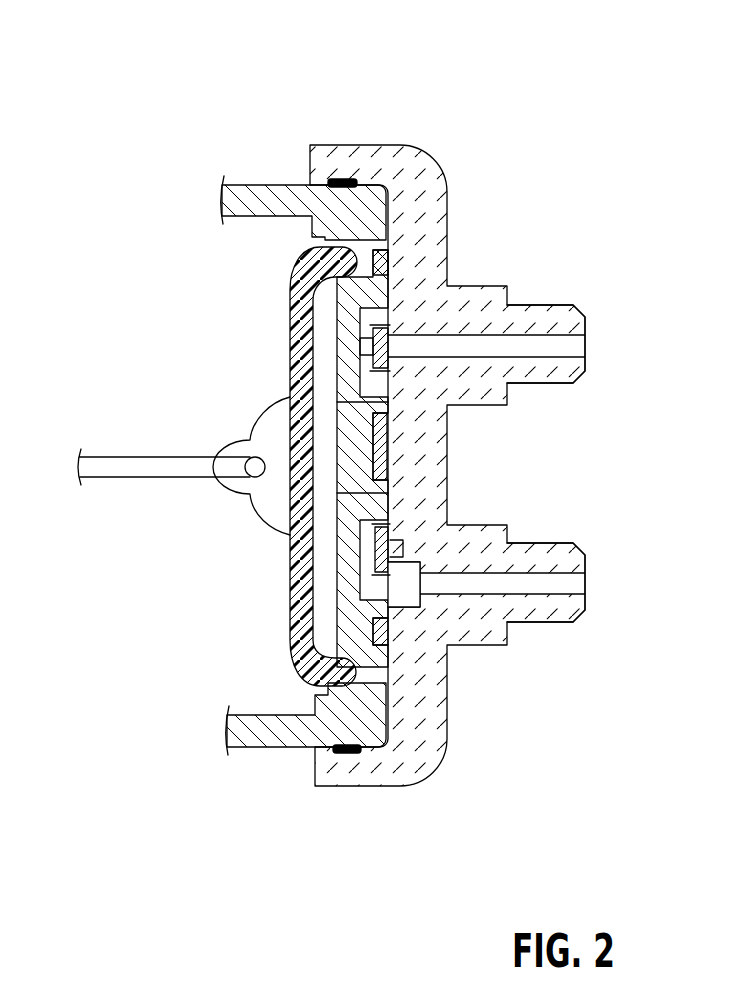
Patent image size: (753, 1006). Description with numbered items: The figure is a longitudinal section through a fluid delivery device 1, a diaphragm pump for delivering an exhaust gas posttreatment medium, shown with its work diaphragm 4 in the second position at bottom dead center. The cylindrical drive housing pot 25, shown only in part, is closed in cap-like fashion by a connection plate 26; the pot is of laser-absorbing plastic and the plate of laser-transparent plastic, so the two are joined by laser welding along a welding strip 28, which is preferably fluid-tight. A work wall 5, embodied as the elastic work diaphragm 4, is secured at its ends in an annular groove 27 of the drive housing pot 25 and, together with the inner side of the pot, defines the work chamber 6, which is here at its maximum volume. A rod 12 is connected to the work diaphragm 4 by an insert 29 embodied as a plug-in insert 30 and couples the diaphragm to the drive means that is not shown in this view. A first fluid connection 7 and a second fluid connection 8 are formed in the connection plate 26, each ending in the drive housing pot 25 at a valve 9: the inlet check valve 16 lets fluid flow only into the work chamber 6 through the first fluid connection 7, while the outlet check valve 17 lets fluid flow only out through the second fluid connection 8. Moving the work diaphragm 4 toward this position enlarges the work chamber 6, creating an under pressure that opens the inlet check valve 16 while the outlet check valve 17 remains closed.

The fluid delivery device 1 is at (470, 132).
The work diaphragm 4 is at (405, 448).
The work wall 5 is at (305, 490).
The work chamber 6 is at (325, 582).
The first fluid connection 7 is at (542, 346).
The second fluid connection 8 is at (545, 585).
The valve 9 is at (436, 466).
The rod 12 is at (128, 468).
The inlet check valve 16 is at (388, 347).
The outlet check valve 17 is at (387, 533).
The drive housing pot 25 is at (255, 202).
The connection plate 26 is at (400, 173).
The annular groove 27 is at (388, 262).
The welding strip 28 is at (340, 178).
The insert 29 is at (269, 466).
The plug-in insert 30 is at (254, 436).